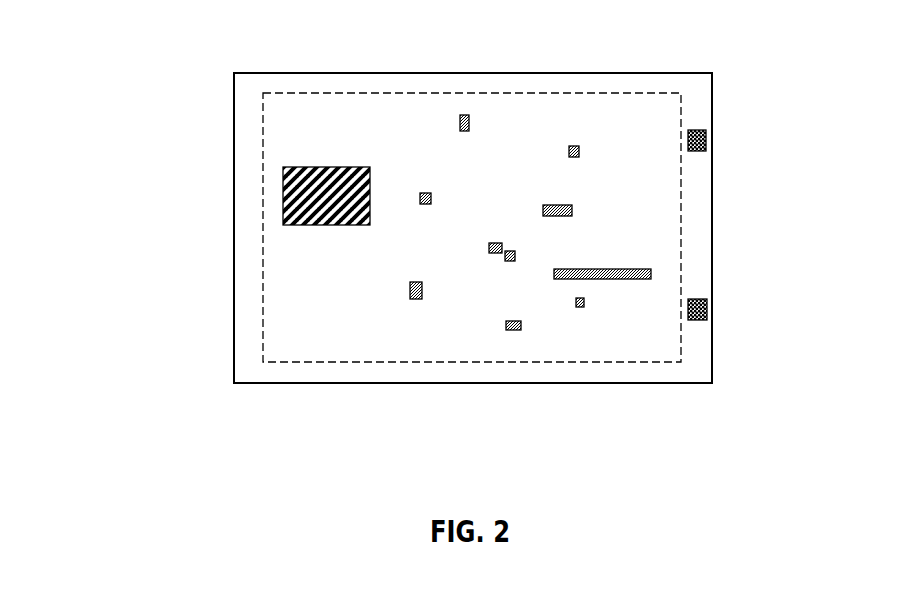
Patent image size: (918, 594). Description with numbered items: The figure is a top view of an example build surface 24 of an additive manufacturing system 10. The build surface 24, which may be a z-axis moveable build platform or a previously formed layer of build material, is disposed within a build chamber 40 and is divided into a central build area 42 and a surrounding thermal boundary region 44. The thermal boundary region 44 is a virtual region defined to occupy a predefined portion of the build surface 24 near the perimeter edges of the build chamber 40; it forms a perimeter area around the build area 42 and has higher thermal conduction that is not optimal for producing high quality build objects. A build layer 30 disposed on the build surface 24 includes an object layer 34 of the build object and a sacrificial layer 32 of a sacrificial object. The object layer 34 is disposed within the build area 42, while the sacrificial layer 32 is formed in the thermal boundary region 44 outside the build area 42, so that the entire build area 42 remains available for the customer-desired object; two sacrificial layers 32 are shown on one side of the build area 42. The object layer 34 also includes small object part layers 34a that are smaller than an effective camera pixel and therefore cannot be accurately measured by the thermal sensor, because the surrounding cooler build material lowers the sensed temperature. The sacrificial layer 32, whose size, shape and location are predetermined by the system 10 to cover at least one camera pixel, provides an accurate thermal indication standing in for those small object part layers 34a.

The additive manufacturing system 10 is at (127, 55).
The build surface 24 is at (445, 383).
The build layer 30 is at (556, 349).
The sacrificial layer 32 is at (706, 140).
The object layer 34 is at (283, 197).
The object part layer 34a is at (515, 250).
The build chamber 40 is at (237, 343).
The build area 42 is at (300, 125).
The thermal boundary region 44 is at (242, 147).